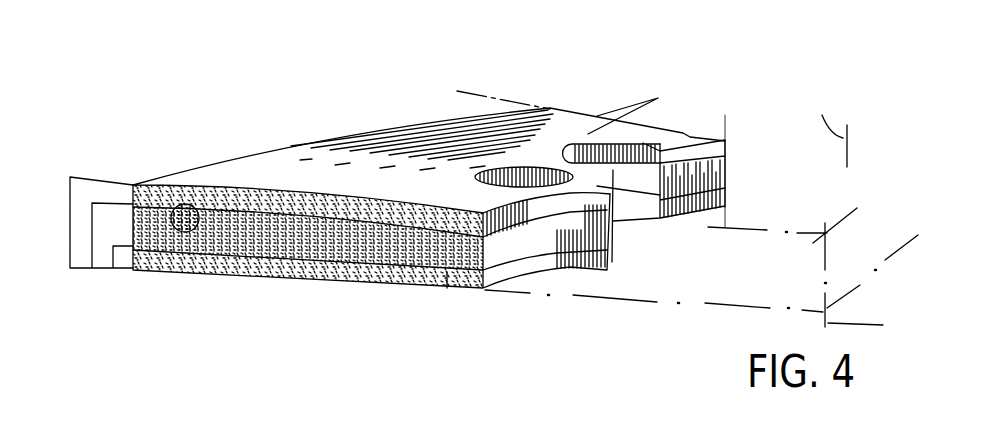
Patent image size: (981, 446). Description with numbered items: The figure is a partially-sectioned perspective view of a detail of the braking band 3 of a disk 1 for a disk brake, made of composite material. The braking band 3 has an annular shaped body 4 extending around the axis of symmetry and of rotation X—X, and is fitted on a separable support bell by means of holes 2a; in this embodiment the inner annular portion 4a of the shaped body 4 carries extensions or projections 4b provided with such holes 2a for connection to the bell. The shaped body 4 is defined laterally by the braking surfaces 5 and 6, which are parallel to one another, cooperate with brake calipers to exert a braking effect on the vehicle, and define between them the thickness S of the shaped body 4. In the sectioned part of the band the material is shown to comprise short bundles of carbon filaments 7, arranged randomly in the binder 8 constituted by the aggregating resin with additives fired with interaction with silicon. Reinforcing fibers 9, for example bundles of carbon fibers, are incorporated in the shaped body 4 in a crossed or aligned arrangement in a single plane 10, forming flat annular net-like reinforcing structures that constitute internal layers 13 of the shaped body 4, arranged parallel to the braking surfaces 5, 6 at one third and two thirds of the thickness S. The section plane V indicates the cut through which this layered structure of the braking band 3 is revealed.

The disk 1 is at (216, 131).
The holes 2a is at (550, 168).
The braking band 3 is at (468, 63).
The shaped body 4 is at (364, 166).
The inner annular portion 4a is at (540, 160).
The projections 4b is at (690, 138).
The braking surface 5 is at (400, 294).
The braking surface 6 is at (428, 161).
The bundles of carbon filaments 7 is at (243, 268).
The binder 8 is at (268, 272).
The reinforcing fibers 9 is at (305, 270).
The single plane 10 is at (587, 297).
The internal layer 13 is at (290, 207).
The thickness S is at (68, 220).
The section line V is at (163, 243).
The axis of symmetry and of rotation X is at (813, 215).